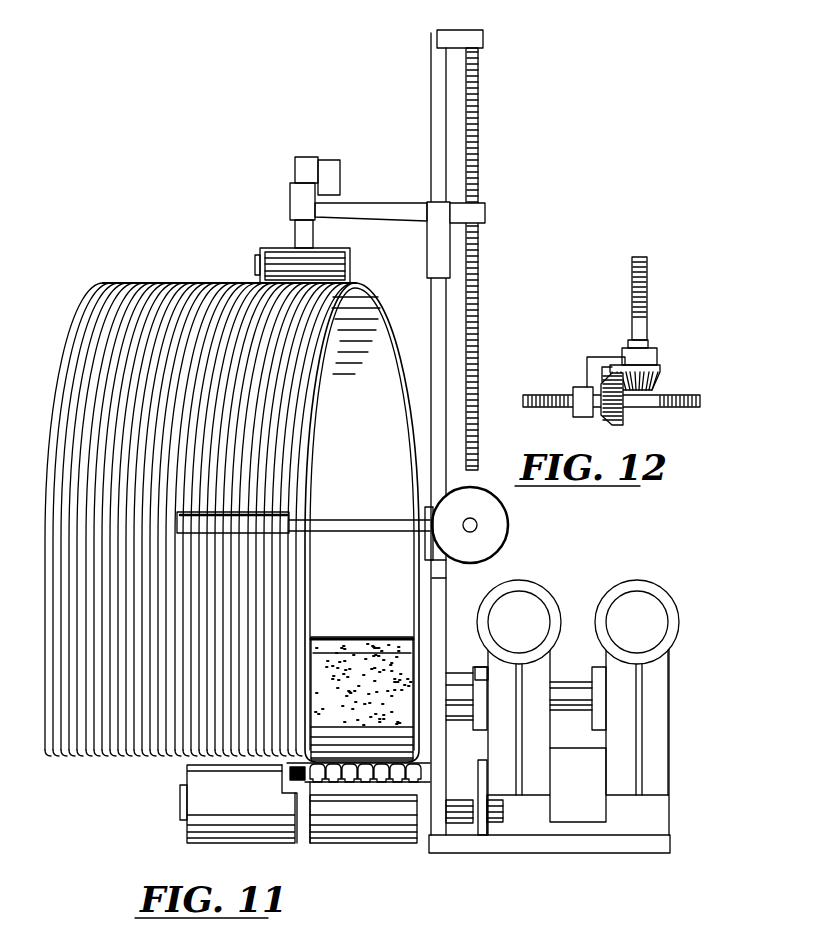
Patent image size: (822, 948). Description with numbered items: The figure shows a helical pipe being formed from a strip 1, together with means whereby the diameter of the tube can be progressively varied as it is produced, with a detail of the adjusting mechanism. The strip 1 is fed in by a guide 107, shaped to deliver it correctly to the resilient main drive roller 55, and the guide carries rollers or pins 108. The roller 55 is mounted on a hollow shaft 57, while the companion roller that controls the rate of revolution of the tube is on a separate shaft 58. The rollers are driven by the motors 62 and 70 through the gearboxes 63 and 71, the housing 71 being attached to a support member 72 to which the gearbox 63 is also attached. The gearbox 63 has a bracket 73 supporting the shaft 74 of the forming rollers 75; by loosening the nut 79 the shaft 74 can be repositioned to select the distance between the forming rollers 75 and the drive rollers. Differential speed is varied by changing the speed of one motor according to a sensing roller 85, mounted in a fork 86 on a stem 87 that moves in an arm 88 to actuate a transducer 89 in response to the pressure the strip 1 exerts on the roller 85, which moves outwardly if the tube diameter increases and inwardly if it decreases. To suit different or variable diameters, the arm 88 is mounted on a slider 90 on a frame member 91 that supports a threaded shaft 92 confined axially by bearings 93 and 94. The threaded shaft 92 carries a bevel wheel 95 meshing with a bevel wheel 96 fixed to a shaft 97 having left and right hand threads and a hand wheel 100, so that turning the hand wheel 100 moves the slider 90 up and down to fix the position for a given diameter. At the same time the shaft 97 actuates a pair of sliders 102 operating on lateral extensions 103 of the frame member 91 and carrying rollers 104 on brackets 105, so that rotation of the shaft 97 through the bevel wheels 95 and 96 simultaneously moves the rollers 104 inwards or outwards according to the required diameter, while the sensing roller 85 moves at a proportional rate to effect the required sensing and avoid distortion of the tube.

In FIG. 11, the strip 1 is at (94, 314).
In FIG. 11, the roller 55 is at (350, 640).
In FIG. 11, the hollow shaft 57 is at (453, 680).
In FIG. 11, the shaft 58 is at (567, 700).
In FIG. 11, the motor 62 is at (542, 587).
In FIG. 11, the gearbox 63 is at (545, 668).
In FIG. 11, the motor 70 is at (658, 588).
In FIG. 11, the housing 71 is at (655, 688).
In FIG. 11, the support member 72 is at (594, 795).
In FIG. 11, the bracket 73 is at (481, 830).
In FIG. 11, the shaft 74 is at (455, 812).
In FIG. 11, the forming roller 75 is at (232, 830).
In FIG. 11, the nut 79 is at (502, 816).
In FIG. 11, the sensing roller 85 is at (276, 266).
In FIG. 11, the fork 86 is at (259, 258).
In FIG. 11, the stem 87 is at (313, 233).
In FIG. 11, the arm 88 is at (375, 211).
In FIG. 11, the transducer 89 is at (330, 165).
In FIG. 11, the slider 90 is at (433, 255).
In FIG. 11, the frame member 91 is at (443, 326).
In FIG. 11, the threaded shaft 92 is at (482, 311).
In FIG. 12, the threaded shaft 92 is at (632, 288).
In FIG. 11, the bearing 93 is at (483, 40).
In FIG. 12, the bearing 94 is at (649, 356).
In FIG. 12, the bevel wheel 95 is at (656, 378).
In FIG. 12, the bevel wheel 96 is at (624, 418).
In FIG. 11, the shaft 97 is at (470, 532).
In FIG. 12, the shaft 97 is at (554, 393).
In FIG. 11, the hand wheel 100 is at (498, 513).
In FIG. 11, the slider 102 is at (428, 521).
In FIG. 11, the lateral extension 103 is at (445, 562).
In FIG. 11, the roller 104 is at (290, 535).
In FIG. 11, the bracket 105 is at (328, 525).
In FIG. 11, the guide 107 is at (407, 787).
In FIG. 11, the rollers or pins 108 is at (401, 782).